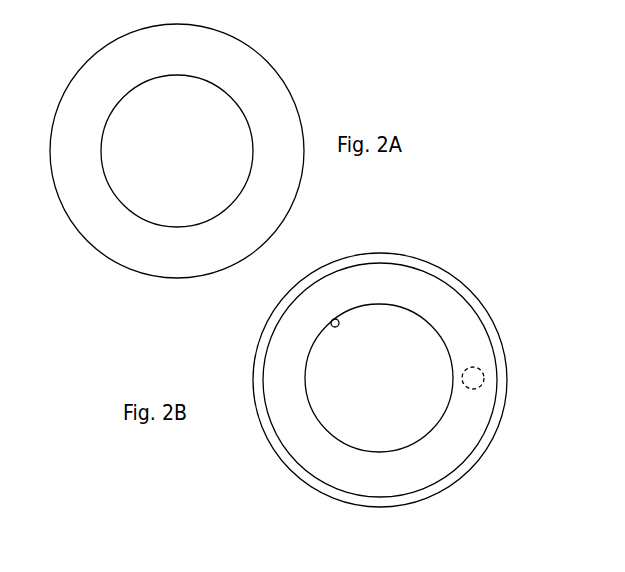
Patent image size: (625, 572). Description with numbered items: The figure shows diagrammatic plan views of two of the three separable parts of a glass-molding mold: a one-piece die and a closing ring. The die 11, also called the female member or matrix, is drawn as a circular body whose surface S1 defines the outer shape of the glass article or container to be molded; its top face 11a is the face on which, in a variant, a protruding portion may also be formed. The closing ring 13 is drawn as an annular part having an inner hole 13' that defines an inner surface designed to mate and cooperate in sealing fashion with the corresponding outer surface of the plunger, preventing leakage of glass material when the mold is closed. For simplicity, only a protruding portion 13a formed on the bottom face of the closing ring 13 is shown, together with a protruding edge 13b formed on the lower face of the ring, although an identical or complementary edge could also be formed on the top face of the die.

In FIG. 2A, the die 11 is at (68, 57).
In FIG. 2A, the top face 11a is at (258, 84).
In FIG. 2A, the surface S1 is at (173, 160).
In FIG. 2B, the closing ring 13 is at (380, 369).
In FIG. 2B, the protruding portion 13a is at (470, 367).
In FIG. 2B, the protruding edge 13b is at (262, 339).
In FIG. 2B, the inner hole 13' is at (318, 317).